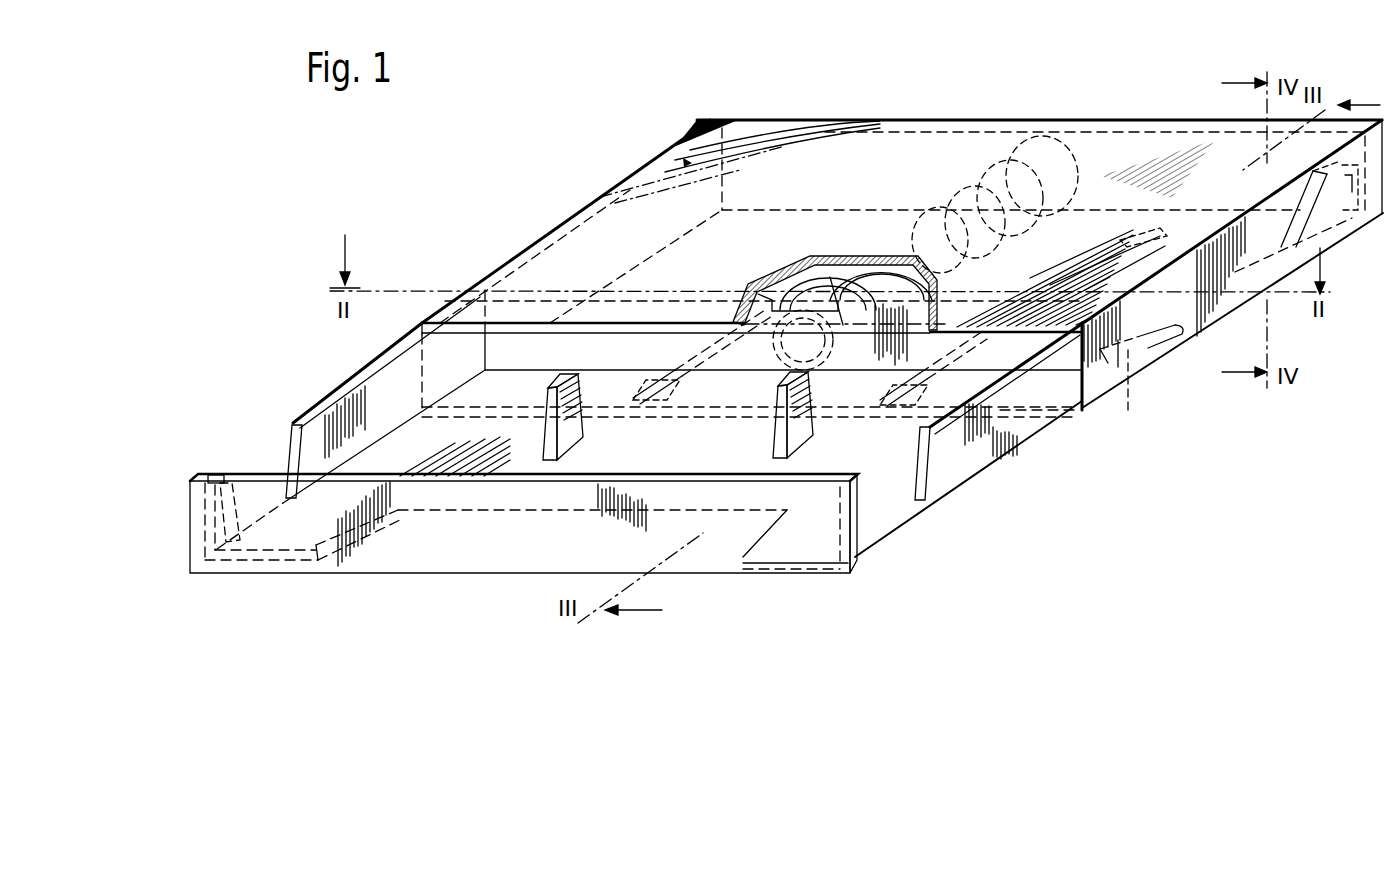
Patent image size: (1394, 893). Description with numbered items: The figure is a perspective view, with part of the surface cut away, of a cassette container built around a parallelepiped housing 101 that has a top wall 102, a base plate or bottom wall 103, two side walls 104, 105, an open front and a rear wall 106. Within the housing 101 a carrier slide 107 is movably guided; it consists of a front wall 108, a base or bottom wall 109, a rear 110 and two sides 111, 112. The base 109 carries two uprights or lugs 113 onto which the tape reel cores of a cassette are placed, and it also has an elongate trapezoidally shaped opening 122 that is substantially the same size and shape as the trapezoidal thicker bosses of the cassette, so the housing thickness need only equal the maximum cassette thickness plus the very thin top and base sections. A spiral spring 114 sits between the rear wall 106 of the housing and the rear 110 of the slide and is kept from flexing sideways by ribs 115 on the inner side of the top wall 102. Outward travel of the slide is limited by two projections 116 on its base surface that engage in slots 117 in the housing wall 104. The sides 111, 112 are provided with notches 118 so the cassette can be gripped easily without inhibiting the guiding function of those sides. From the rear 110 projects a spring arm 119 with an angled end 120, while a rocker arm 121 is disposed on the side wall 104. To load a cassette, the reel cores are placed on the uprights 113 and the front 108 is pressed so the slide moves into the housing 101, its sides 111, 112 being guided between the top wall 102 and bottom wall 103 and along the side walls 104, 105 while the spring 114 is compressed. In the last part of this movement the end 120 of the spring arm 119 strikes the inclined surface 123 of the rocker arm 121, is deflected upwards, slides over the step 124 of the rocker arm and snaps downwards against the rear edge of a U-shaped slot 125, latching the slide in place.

The housing 101 is at (610, 188).
The top wall 102 is at (578, 247).
The base plate or bottom wall 103 is at (1058, 398).
The side wall 104 is at (1147, 352).
The side wall 105 is at (648, 163).
The rear wall 106 is at (770, 135).
The carrier slide 107 is at (312, 393).
The front wall 108 is at (486, 573).
The base or bottom wall 109 is at (883, 508).
The rear 110 is at (557, 358).
The side 111 is at (988, 450).
The side 112 is at (390, 375).
The uprights or lugs 113 is at (546, 438).
The spiral spring 114 is at (792, 280).
The ribs 115 is at (878, 275).
The projections 116 is at (663, 398).
The slots 117 is at (690, 355).
The notches 118 is at (233, 503).
The spring arm 119 is at (1130, 356).
The angled end 120 is at (1183, 338).
The rocker arm 121 is at (1236, 276).
The elongate trapezoidally shaped opening 122 is at (512, 512).
The inclined surface 123 is at (1298, 205).
The step 124 is at (1357, 205).
The U-shaped slot 125 is at (1348, 212).